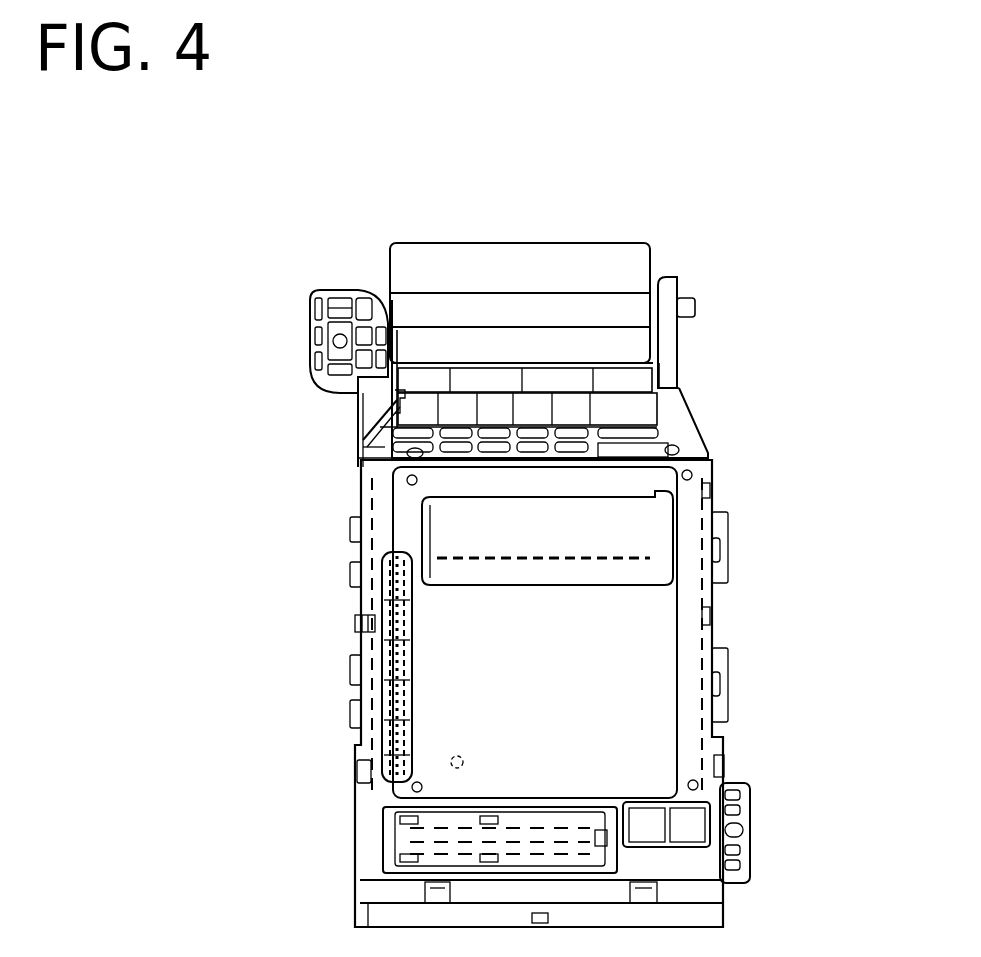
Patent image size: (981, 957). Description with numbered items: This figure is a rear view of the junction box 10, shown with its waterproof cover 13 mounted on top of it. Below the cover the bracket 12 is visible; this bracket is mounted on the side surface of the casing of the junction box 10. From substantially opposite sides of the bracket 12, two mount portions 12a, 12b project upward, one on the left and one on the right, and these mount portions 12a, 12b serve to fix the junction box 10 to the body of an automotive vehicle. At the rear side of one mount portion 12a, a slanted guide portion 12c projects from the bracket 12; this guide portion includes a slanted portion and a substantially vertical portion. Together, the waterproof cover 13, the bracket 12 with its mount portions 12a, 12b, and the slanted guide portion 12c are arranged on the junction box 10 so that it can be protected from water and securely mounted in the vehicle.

The junction box 10 is at (727, 617).
The bracket 12 is at (702, 418).
The mount portion 12a is at (307, 298).
The mount portion 12b is at (680, 280).
The slanted guide portion 12c is at (357, 417).
The waterproof cover 13 is at (553, 237).